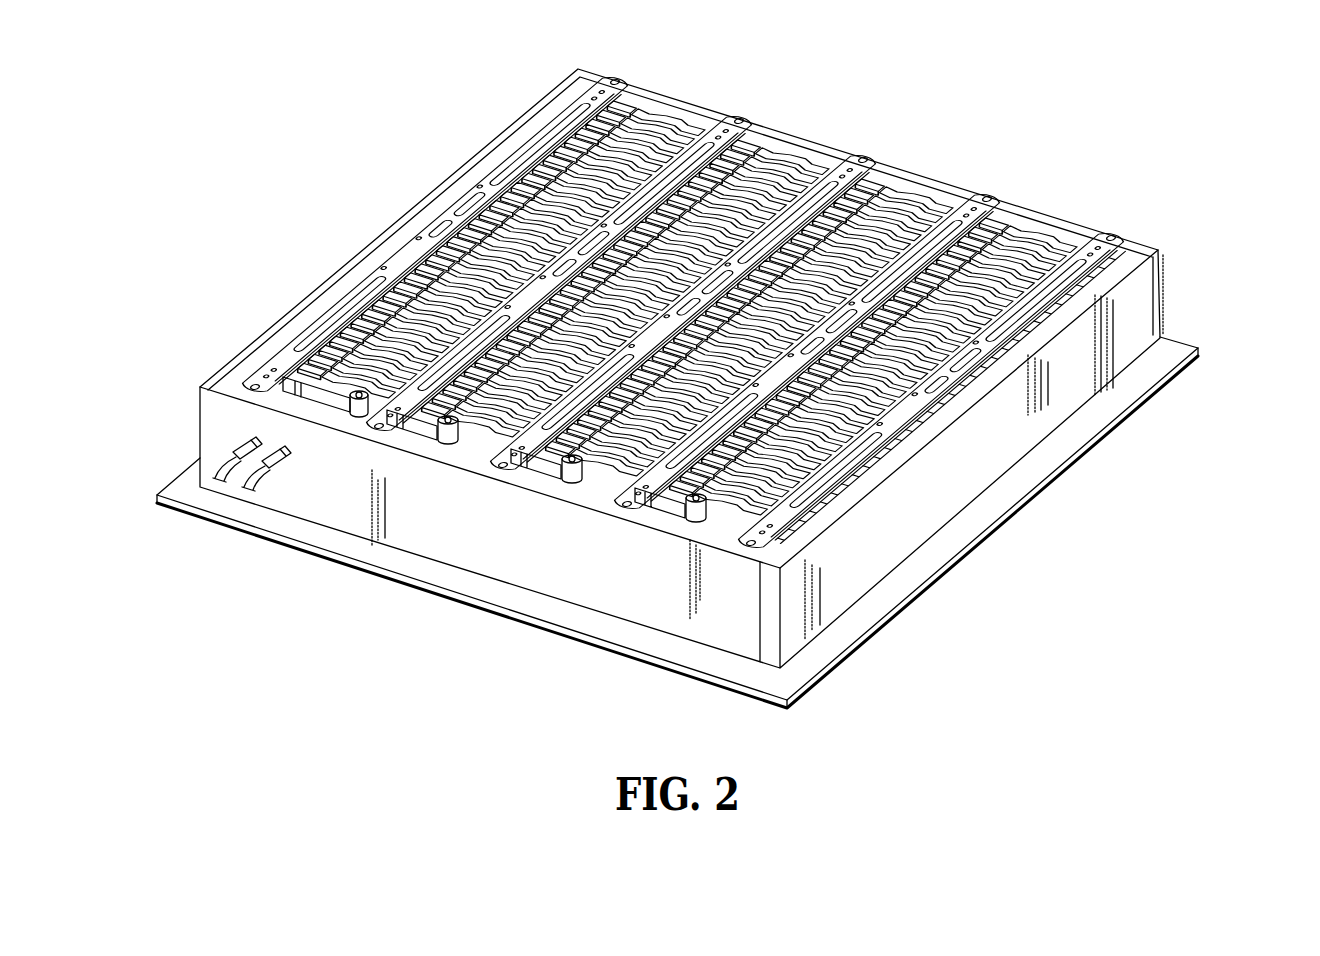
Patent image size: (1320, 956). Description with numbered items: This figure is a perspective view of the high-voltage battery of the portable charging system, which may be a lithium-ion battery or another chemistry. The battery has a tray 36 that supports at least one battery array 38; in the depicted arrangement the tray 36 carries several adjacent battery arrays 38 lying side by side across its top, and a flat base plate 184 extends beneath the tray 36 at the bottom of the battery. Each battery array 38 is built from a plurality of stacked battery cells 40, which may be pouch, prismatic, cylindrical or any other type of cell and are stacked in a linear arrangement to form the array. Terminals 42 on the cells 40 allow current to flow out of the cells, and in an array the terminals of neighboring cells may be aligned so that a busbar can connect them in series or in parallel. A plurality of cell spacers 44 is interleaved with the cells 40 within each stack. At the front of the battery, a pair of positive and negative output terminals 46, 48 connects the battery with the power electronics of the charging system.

The tray 36 is at (702, 388).
The battery array 38 is at (747, 213).
The battery cell 40 is at (545, 203).
The terminal 42 is at (707, 192).
The cell spacer 44 is at (681, 306).
The positive output terminal 46 is at (237, 466).
The negative output terminal 48 is at (266, 475).
The base plate 184 is at (800, 663).